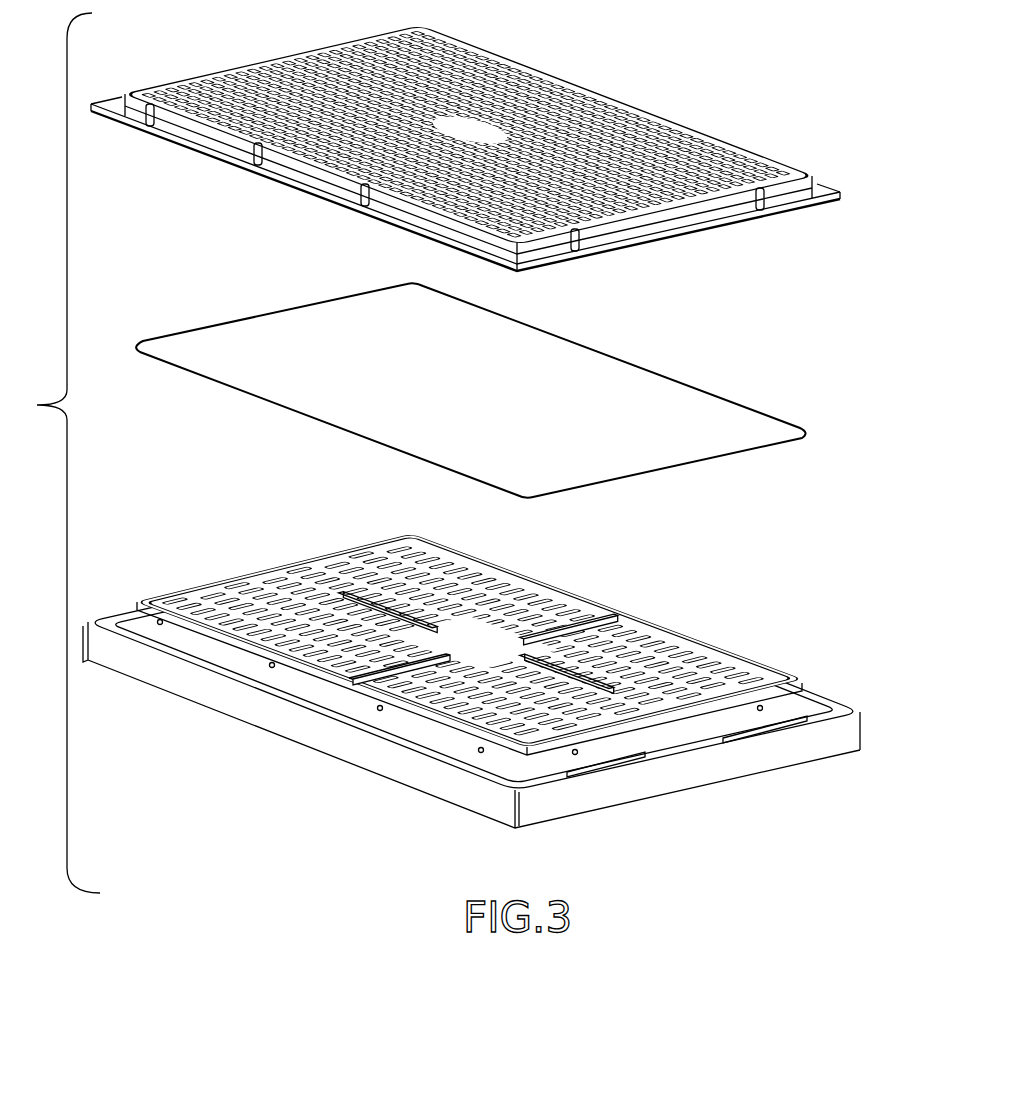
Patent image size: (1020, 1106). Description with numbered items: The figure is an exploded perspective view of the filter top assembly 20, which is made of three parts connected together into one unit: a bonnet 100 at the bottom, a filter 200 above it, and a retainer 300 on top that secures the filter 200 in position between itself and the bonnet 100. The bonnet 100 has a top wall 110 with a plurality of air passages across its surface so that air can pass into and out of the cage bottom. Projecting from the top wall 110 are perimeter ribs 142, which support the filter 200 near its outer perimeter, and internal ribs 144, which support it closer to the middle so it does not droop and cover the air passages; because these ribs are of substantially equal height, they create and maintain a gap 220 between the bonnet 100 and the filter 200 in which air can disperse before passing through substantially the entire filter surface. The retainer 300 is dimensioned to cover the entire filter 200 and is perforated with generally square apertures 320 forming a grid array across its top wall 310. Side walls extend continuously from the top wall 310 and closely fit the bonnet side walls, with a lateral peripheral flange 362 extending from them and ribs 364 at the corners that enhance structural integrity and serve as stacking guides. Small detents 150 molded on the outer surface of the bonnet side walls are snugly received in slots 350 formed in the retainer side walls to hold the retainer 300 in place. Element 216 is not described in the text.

The filter top assembly 20 is at (62, 401).
The bonnet 100 is at (778, 661).
The top wall 110 is at (328, 612).
The perimeter ribs 142 is at (738, 703).
The internal ribs 144 is at (545, 628).
The detents 150 is at (270, 666).
The filter 200 is at (512, 413).
The groove 216 is at (717, 214).
The gap 220 is at (221, 608).
The retainer 300 is at (485, 153).
The top wall 310 is at (727, 144).
The apertures 320 is at (514, 72).
The slots 350 is at (358, 203).
The lateral peripheral flange 362 is at (661, 241).
The ribs 364 is at (820, 184).